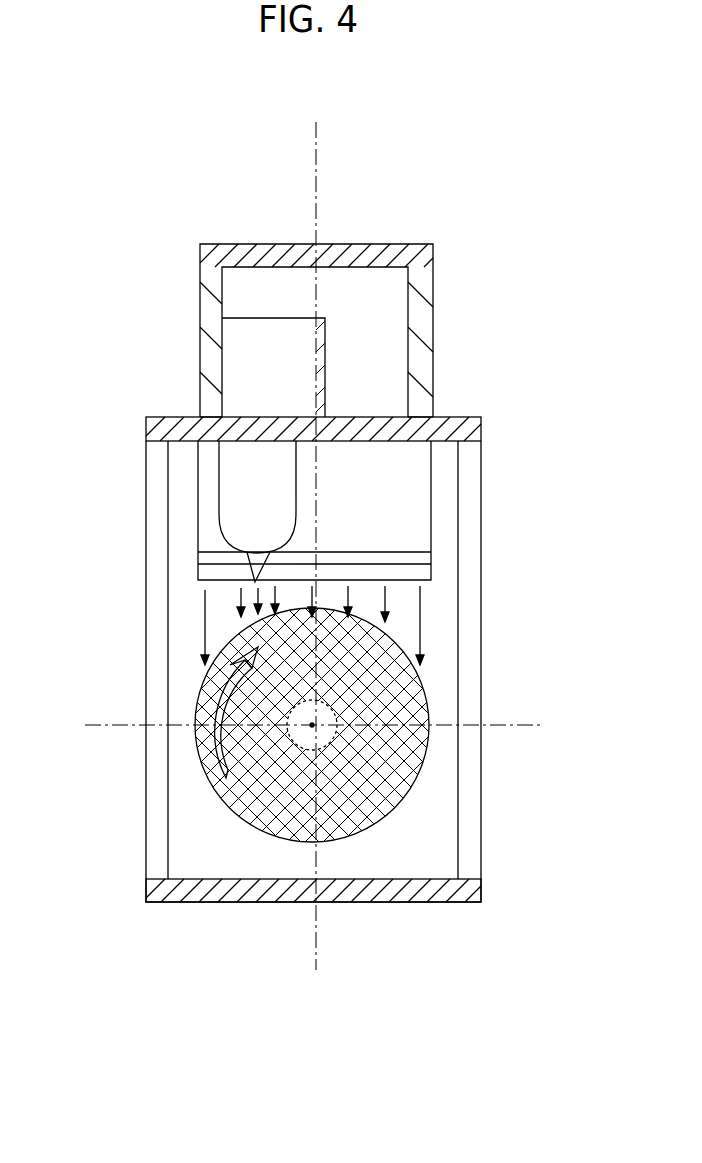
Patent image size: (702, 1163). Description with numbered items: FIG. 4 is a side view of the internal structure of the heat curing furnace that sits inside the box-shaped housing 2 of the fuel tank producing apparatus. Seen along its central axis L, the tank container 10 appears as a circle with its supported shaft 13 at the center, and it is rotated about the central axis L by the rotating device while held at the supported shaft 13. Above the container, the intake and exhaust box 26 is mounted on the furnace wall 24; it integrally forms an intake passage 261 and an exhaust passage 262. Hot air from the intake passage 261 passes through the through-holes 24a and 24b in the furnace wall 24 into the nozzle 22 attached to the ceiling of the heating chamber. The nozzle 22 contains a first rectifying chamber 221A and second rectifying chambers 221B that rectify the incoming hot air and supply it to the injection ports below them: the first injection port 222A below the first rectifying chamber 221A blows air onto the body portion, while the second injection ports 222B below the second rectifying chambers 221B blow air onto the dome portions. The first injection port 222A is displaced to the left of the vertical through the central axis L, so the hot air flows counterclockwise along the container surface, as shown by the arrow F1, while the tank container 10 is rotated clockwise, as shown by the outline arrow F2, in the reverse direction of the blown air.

The housing 2 is at (482, 430).
The tank container 10 is at (222, 815).
The supported shaft 13 is at (283, 842).
The central axis L is at (430, 740).
The nozzle 22 is at (50, 470).
The first rectifying chamber 221A is at (245, 488).
The second rectifying chamber 221B is at (400, 488).
The first injection port 222A is at (243, 574).
The second injection port 222B is at (420, 572).
The furnace wall 24 is at (157, 653).
The through-hole 24a is at (250, 398).
The through-hole 24b is at (370, 417).
The intake and exhaust box 26 is at (200, 281).
The intake passage 261 is at (245, 300).
The exhaust passage 262 is at (375, 300).
The arrow F1 is at (235, 596).
The outline arrow F2 is at (254, 703).